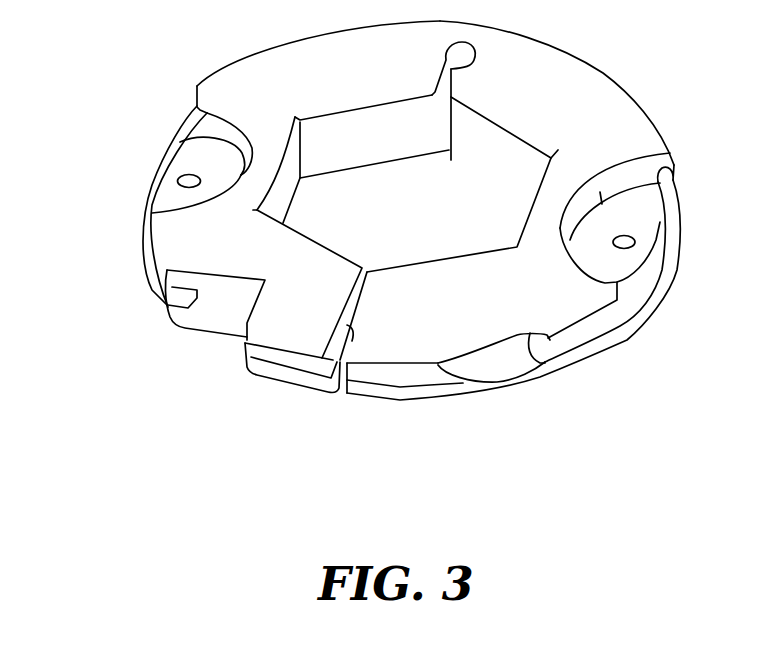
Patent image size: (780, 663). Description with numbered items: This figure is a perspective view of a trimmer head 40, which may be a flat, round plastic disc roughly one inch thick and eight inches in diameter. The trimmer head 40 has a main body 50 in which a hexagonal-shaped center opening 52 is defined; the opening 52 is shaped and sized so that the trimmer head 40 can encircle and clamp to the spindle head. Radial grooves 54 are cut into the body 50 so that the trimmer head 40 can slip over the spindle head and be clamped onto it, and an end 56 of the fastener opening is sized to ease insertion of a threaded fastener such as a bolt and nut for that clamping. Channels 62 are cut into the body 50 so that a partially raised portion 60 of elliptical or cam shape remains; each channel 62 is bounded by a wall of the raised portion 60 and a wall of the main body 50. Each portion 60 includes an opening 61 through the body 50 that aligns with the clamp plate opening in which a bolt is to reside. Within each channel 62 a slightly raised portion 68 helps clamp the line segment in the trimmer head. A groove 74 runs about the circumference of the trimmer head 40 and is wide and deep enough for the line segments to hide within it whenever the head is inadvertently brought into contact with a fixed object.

The trimmer head 40 is at (676, 123).
The main body 50 is at (578, 102).
The hexagonal-shaped center opening 52 is at (348, 221).
The radial grooves 54 is at (370, 258).
The end of opening 56 is at (236, 344).
The partially raised portion 60 is at (193, 157).
The opening 61 is at (182, 180).
The channel 62 is at (219, 134).
The slightly raised portion 68 is at (502, 363).
The groove 74 is at (388, 372).